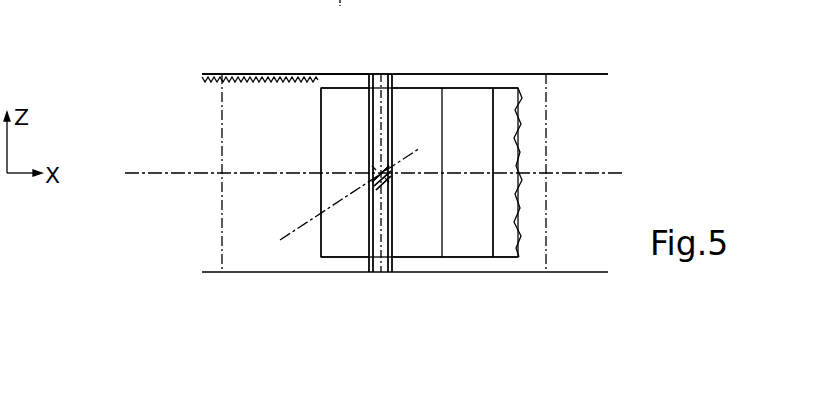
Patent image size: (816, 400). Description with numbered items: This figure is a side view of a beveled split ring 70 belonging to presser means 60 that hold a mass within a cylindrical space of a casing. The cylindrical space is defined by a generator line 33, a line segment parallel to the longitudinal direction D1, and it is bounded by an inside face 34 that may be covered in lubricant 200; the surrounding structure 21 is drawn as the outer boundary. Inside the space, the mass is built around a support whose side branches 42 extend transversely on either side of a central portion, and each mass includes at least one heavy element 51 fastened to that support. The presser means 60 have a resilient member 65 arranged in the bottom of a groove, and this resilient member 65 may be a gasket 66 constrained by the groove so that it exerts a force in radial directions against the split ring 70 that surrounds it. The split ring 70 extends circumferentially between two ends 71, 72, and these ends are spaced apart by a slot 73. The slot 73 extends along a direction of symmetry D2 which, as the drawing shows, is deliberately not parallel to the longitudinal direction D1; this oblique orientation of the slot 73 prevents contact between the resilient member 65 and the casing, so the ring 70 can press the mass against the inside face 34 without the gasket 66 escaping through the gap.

The lubricant 200 is at (207, 75).
The floor / wall panel 21 is at (574, 74).
The generator line 33 is at (258, 74).
The inside face 34 is at (240, 78).
The presser means 60 is at (383, 291).
The heavy element 51 is at (340, 242).
The side branch 42 is at (469, 238).
The split ring 70 is at (390, 75).
The first end 71 is at (375, 162).
The second end 72 is at (391, 186).
The resilient member 65 is at (395, 166).
The gasket 66 is at (381, 178).
The slot 73 is at (364, 181).
The longitudinal direction D1 is at (147, 174).
The direction of symmetry D2 is at (293, 231).